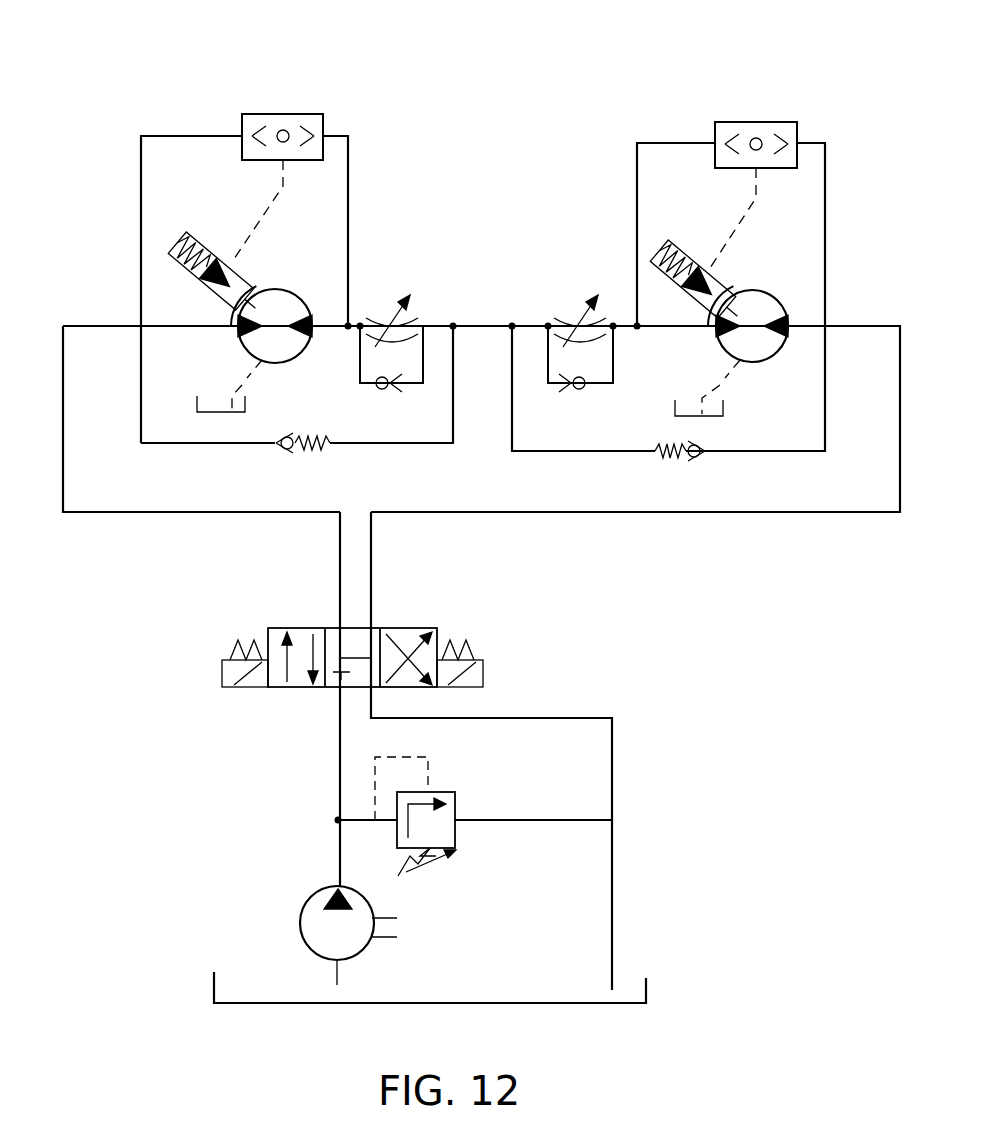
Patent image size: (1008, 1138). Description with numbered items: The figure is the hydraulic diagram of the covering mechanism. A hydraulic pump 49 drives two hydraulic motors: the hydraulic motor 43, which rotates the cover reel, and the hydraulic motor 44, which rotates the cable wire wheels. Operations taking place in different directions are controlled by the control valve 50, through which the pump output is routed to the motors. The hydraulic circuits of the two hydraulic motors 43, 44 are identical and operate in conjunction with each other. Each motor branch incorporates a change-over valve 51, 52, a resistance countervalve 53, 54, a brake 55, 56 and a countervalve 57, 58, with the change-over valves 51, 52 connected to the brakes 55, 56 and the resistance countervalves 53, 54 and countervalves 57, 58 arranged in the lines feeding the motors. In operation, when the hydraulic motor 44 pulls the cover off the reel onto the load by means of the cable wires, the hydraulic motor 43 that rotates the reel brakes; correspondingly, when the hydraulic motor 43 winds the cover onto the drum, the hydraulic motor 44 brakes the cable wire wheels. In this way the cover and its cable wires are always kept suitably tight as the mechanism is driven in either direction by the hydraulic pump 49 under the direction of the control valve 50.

The hydraulic motor 43 is at (305, 297).
The hydraulic motor 44 is at (790, 300).
The hydraulic pump 49 is at (318, 892).
The control valve 50 is at (315, 628).
The change-over valve 51 is at (284, 116).
The change-over valve 52 is at (756, 124).
The resistance countervalve 53 is at (413, 316).
The resistance countervalve 54 is at (575, 318).
The brake 55 is at (206, 298).
The brake 56 is at (728, 292).
The countervalve 57 is at (283, 450).
The countervalve 58 is at (700, 460).